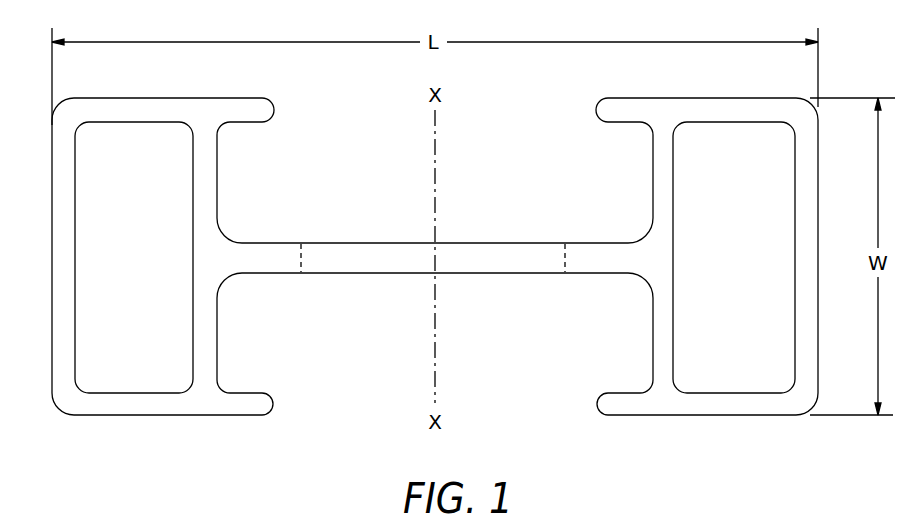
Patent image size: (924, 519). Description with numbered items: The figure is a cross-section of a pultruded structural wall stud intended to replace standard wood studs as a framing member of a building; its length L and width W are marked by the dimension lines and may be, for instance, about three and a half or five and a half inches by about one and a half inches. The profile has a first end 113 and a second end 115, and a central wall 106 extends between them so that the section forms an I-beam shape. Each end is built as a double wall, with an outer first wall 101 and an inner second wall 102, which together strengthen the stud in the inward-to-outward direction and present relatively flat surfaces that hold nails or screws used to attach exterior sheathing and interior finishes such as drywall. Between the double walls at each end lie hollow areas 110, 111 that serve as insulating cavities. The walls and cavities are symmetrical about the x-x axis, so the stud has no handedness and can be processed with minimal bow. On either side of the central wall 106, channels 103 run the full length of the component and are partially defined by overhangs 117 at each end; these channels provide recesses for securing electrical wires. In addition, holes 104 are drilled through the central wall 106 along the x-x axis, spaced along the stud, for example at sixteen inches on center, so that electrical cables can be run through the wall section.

The first wall 101 is at (62, 318).
The second wall 102 is at (200, 318).
The channel 103 is at (542, 215).
The hole 104 is at (323, 282).
The central wall 106 is at (243, 242).
The hollow area 110 is at (780, 188).
The hollow area 111 is at (88, 188).
The first end 113 is at (735, 410).
The second end 115 is at (106, 410).
The overhang 117 is at (258, 107).